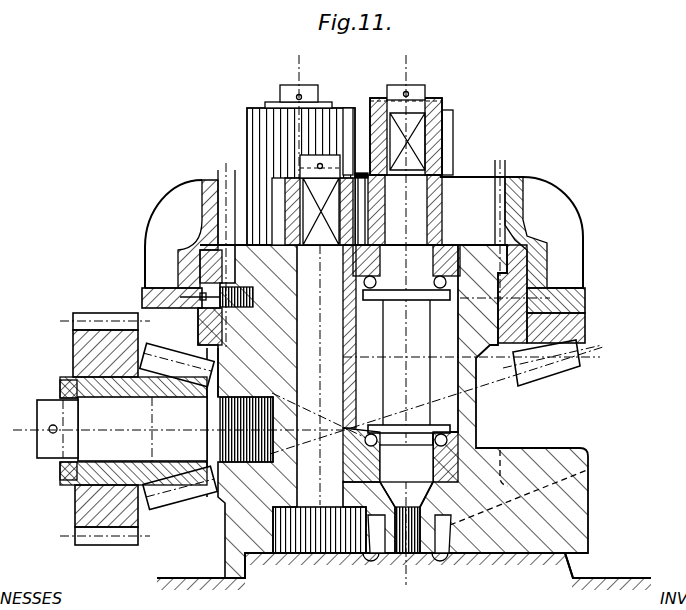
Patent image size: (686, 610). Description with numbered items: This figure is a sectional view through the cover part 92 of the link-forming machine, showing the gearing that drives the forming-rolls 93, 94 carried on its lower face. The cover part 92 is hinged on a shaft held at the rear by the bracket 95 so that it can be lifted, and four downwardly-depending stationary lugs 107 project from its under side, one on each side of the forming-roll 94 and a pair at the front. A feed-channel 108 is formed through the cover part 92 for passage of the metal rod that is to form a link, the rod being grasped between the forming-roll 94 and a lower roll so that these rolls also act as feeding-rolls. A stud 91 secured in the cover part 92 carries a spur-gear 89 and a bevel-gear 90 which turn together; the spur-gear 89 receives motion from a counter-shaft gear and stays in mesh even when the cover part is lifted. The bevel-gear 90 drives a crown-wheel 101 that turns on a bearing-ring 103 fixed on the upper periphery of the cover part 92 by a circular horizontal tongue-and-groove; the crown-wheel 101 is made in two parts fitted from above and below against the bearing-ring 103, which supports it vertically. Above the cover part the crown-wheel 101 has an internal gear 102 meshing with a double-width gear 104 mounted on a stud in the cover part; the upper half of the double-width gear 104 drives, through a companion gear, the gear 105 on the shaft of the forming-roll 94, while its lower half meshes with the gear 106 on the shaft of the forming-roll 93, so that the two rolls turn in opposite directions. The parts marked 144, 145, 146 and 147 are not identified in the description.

The spur-gear 89 is at (95, 510).
The bevel-gear 90 is at (187, 487).
The stud 91 is at (179, 431).
The cover part 92 is at (463, 403).
The forming-roll 93 is at (312, 535).
The forming-roll 94 is at (398, 328).
The bracket 95 is at (573, 563).
The crown-wheel 101 is at (548, 378).
The internal gear 102 is at (516, 183).
The bearing-ring 103 is at (516, 273).
The double-width gear 104 is at (262, 143).
The gear 105 is at (372, 115).
The gear 106 is at (370, 215).
The stationary lugs 107 is at (425, 555).
The feed-channel 108 is at (505, 485).
The wall 144 is at (496, 294).
The worm 145 is at (253, 300).
The flange 146 is at (585, 297).
The nozzle 147 is at (578, 345).